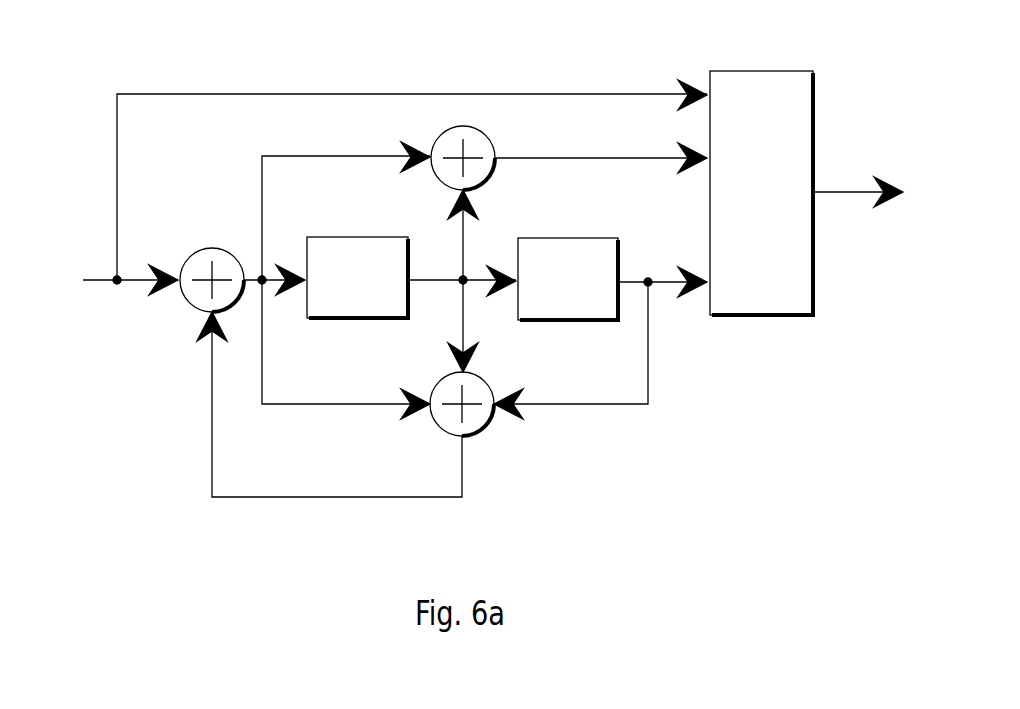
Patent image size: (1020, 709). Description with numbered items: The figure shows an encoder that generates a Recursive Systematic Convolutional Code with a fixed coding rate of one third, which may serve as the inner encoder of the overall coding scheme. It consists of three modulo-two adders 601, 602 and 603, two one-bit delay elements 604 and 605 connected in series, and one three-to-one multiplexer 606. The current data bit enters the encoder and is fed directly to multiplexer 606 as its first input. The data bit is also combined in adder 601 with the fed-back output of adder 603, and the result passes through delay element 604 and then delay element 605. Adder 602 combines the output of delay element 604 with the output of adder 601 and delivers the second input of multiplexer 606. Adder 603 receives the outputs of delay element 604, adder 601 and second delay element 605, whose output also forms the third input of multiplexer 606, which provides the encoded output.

The modulo-two adder 601 is at (198, 253).
The modulo-two adder 602 is at (445, 132).
The modulo-two adder 603 is at (492, 418).
The delay element 604 is at (338, 243).
The second delay element 605 is at (548, 245).
The three-to-one multiplexer 606 is at (737, 75).